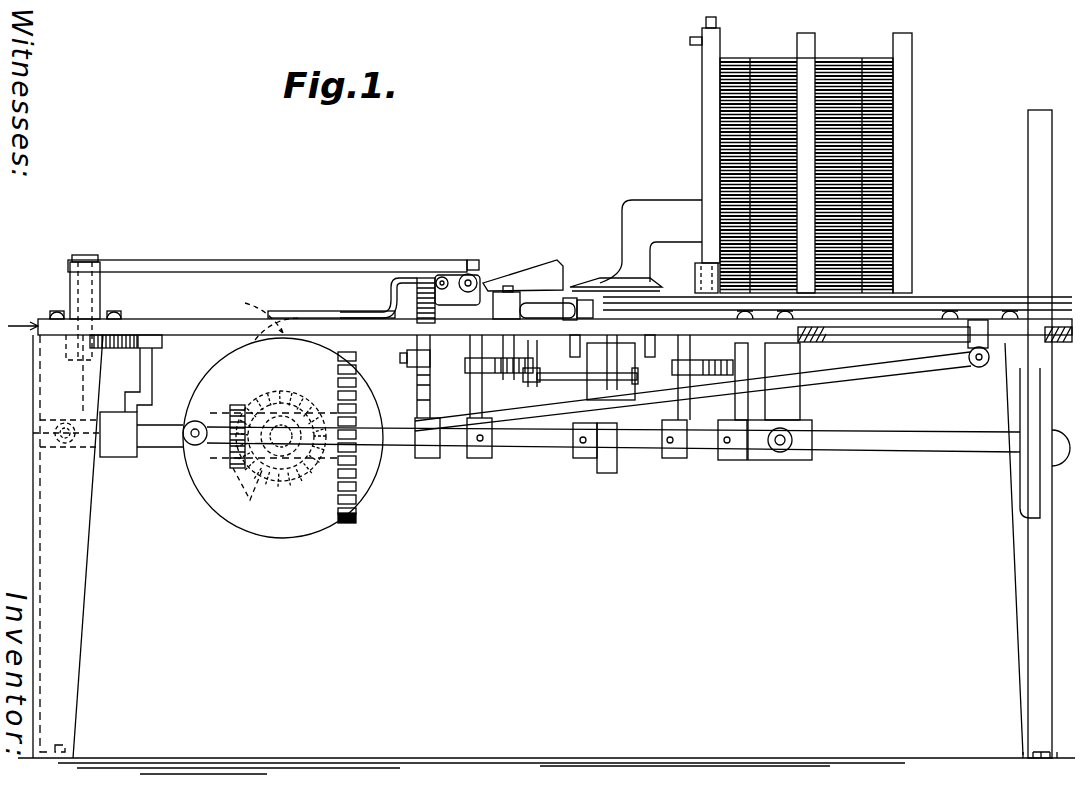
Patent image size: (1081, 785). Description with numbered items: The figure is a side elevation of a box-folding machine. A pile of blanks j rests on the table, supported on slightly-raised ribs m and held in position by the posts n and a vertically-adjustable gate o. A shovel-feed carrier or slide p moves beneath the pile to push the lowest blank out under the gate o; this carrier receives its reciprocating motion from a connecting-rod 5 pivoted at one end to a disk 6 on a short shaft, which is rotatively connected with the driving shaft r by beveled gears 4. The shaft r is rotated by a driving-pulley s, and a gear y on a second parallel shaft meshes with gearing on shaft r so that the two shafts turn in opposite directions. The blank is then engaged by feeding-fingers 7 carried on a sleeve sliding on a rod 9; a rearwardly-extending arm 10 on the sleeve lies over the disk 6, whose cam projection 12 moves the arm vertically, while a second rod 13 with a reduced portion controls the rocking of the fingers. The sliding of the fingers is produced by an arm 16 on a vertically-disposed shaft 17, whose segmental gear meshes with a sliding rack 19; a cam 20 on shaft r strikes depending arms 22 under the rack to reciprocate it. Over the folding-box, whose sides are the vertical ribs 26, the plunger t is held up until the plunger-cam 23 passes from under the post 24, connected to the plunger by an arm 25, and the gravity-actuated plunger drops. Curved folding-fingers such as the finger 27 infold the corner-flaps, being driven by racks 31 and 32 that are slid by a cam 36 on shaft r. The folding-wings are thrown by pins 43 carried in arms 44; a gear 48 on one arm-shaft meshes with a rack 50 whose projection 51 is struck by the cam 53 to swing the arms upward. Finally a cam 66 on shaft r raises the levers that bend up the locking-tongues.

The beveled gears 4 is at (251, 500).
The connecting-rod 5 is at (862, 372).
The disk 6 is at (283, 540).
The feeding-fingers 7 is at (487, 270).
The rod 9 is at (468, 274).
The rearwardly-extending arm 10 is at (326, 311).
The cam projection 12 is at (260, 312).
The second rod 13 is at (442, 277).
The arm 16 is at (248, 259).
The vertically-disposed shaft 17 is at (84, 255).
The sliding rack 19 is at (160, 343).
The cam 20 is at (123, 458).
The depending arms 22 is at (152, 378).
The plunger-cam 23 is at (742, 423).
The post 24 is at (935, 348).
The arm 25 is at (662, 208).
The vertical ribs 26 is at (557, 295).
The curved folding-finger 27 is at (540, 298).
The rack 31 is at (482, 373).
The rack 32 is at (693, 377).
The cam 36 is at (480, 459).
The pins 43 is at (565, 380).
The arms 44 is at (534, 358).
The gear 48 is at (412, 305).
The rack 50 is at (412, 343).
The projection 51 is at (417, 393).
The cam 53 is at (430, 459).
The cam 66 is at (598, 468).
The pile of blanks j is at (880, 128).
The ribs m is at (914, 316).
The posts n is at (912, 53).
The vertically-adjustable gate o is at (701, 97).
The carrier or slide p is at (964, 319).
The shaft r is at (903, 456).
The driving-pulley s is at (1017, 482).
The plunger t is at (597, 270).
The gear y is at (350, 525).